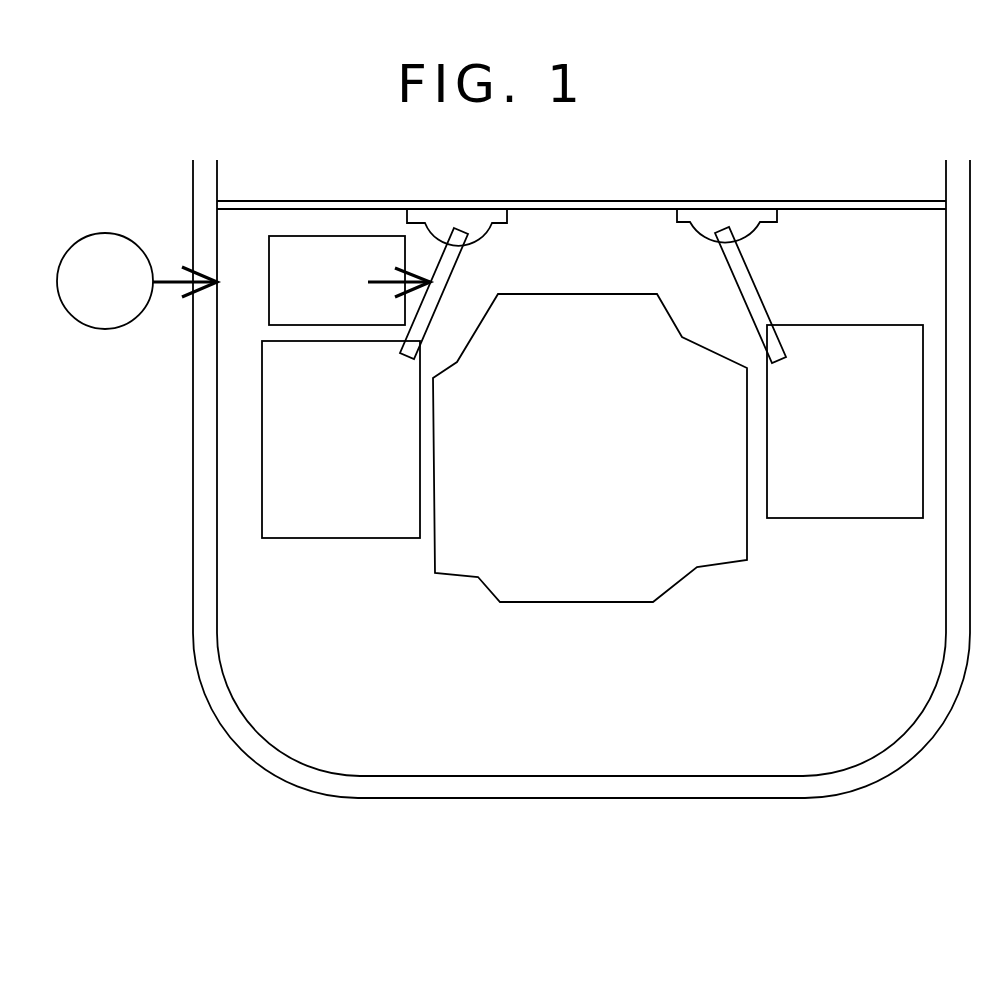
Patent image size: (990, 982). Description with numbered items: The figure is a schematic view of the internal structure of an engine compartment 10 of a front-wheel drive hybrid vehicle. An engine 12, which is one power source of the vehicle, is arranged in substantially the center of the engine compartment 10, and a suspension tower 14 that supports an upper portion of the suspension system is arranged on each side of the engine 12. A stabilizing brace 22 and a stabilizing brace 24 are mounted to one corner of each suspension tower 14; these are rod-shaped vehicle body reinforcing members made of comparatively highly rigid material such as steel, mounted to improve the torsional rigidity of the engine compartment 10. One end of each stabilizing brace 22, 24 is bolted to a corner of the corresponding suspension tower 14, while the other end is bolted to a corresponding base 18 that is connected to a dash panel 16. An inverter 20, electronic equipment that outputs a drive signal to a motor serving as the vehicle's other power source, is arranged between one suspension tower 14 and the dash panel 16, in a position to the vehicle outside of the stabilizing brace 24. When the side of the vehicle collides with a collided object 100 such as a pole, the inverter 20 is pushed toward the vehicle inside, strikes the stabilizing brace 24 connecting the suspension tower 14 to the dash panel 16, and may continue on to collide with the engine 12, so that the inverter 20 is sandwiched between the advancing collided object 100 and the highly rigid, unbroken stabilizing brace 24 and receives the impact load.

The engine compartment 10 is at (563, 699).
The engine 12 is at (722, 553).
The suspension tower 14 is at (344, 540).
The dash panel 16 is at (577, 200).
The base 18 is at (490, 236).
The inverter 20 is at (273, 305).
The stabilizing brace 22 is at (758, 273).
The stabilizing brace 24 is at (450, 270).
The collided object 100 is at (102, 318).